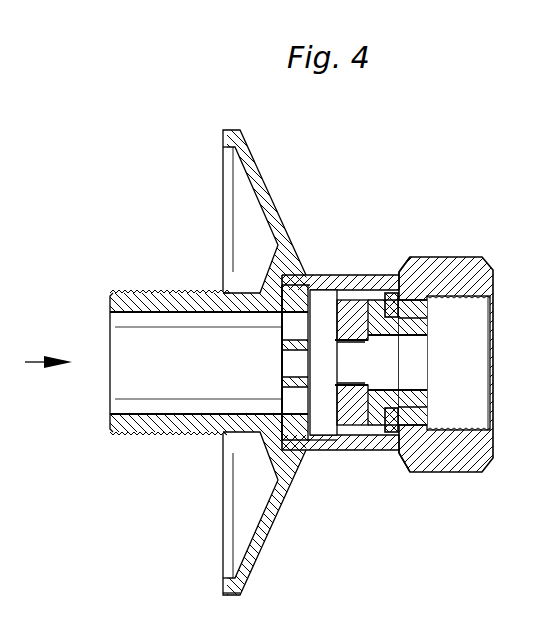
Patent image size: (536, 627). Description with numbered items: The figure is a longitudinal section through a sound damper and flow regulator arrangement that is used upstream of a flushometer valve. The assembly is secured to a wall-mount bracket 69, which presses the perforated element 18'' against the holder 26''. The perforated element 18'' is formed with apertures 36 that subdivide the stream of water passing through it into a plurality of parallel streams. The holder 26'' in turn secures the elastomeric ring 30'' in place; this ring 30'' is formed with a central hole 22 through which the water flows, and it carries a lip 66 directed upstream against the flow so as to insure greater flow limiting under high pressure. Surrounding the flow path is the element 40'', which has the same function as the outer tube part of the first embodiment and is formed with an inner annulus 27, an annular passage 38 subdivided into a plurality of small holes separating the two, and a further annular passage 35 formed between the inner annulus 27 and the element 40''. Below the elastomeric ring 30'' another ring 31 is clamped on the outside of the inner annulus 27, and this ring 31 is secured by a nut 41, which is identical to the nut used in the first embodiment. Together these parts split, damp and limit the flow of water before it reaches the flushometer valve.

The perforated element 18'' is at (268, 313).
The central hole 22 is at (349, 290).
The holder 26'' is at (338, 473).
The inner annulus 27 is at (388, 296).
The ring 30'' is at (268, 313).
The ring 31 is at (391, 430).
The annular passage 35 is at (421, 284).
The apertures 36 is at (293, 400).
The annular passage 38 is at (361, 305).
The element 40'' is at (268, 313).
The nut 41 is at (424, 437).
The lip 66 is at (334, 310).
The wall-mount bracket 69 is at (240, 586).